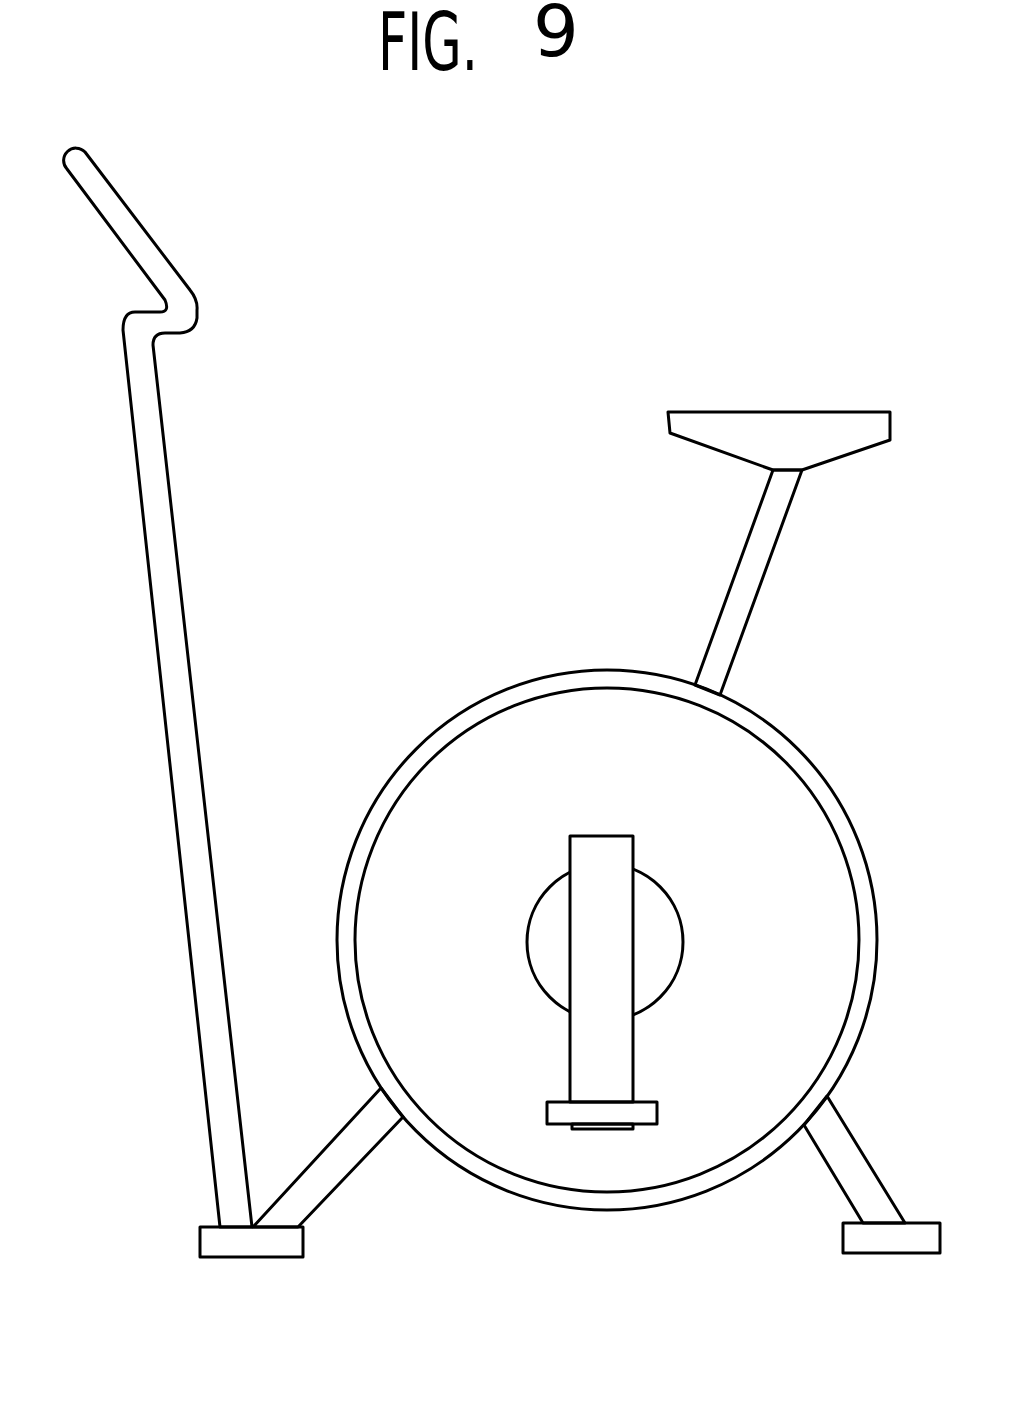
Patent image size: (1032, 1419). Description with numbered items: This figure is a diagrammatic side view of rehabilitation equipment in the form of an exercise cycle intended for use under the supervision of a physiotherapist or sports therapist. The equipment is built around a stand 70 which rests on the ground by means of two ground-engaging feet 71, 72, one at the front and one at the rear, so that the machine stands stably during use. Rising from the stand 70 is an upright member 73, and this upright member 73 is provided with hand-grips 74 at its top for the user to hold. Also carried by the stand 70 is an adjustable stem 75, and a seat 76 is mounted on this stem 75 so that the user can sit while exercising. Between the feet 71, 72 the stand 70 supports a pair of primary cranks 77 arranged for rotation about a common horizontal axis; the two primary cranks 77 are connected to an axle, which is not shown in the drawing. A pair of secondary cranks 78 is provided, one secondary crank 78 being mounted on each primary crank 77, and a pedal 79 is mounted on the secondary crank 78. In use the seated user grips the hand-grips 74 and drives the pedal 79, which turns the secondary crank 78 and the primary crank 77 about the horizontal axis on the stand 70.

The stand 70 is at (210, 766).
The ground-engaging foot 71 is at (233, 1237).
The ground-engaging foot 72 is at (857, 1237).
The upright member 73 is at (158, 518).
The hand-grips 74 is at (135, 245).
The adjustable stem 75 is at (732, 618).
The seat 76 is at (715, 433).
The primary crank 77 is at (508, 788).
The secondary crank 78 is at (598, 960).
The pedal 79 is at (612, 1113).